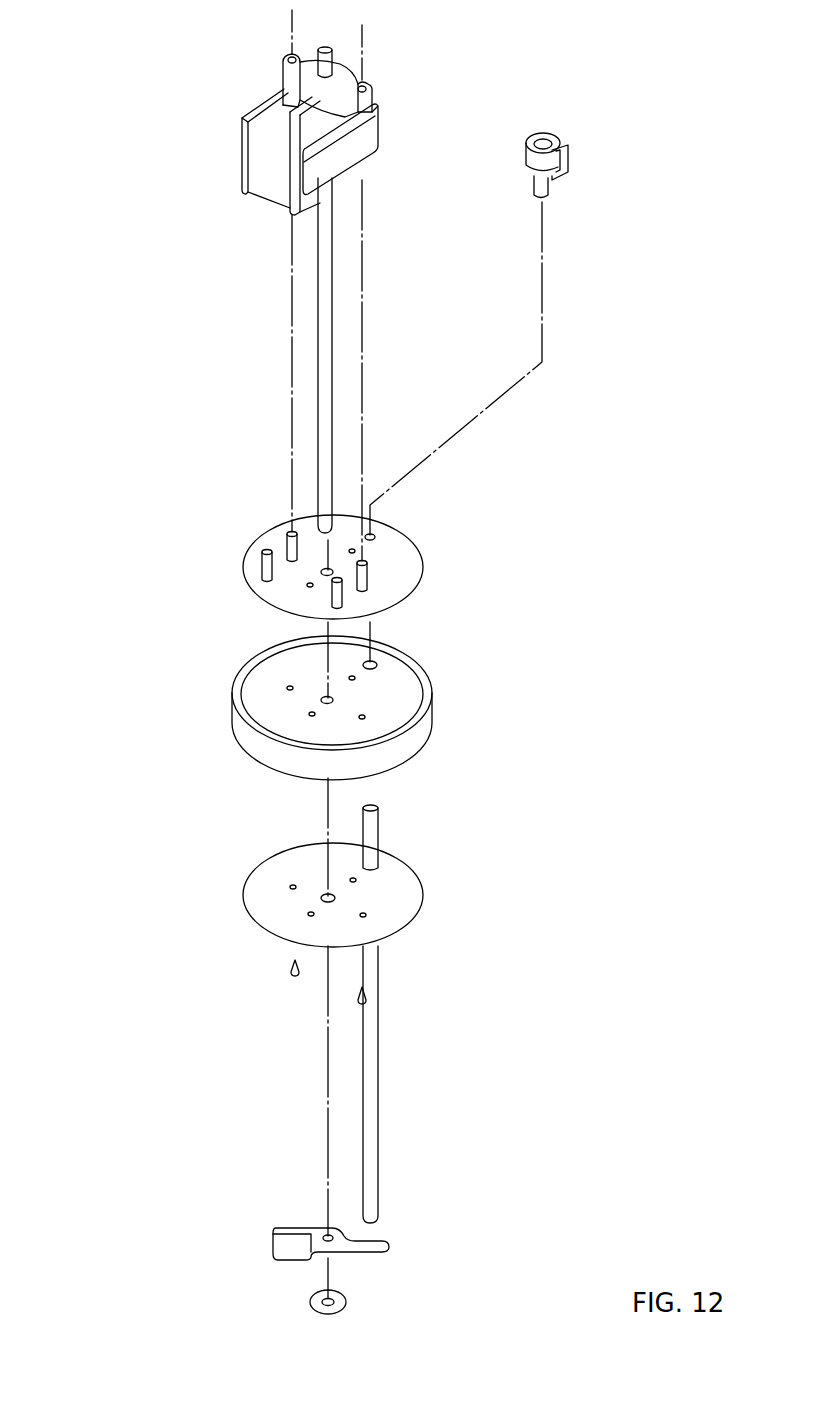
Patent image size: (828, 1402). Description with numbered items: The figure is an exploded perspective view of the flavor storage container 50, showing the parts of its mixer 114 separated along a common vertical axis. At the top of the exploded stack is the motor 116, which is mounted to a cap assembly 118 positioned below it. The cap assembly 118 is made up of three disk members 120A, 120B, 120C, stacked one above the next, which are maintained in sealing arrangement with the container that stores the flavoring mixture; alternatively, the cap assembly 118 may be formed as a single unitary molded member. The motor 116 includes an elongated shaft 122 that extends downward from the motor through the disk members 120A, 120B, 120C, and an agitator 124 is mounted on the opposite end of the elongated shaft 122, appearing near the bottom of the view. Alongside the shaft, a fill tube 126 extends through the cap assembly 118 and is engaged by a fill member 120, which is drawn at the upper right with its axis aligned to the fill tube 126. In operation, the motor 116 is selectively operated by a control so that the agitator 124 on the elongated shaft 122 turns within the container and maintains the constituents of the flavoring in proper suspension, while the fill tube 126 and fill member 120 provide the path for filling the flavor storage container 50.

The flavor storage container 50 is at (612, 618).
The mixer 114 is at (110, 1272).
The motor 116 is at (390, 129).
The cap assembly 118 is at (206, 905).
The fill member 120 is at (574, 158).
The disk member 120A is at (428, 547).
The disk member 120B is at (436, 716).
The disk member 120C is at (429, 896).
The elongated shaft 122 is at (334, 387).
The agitator 124 is at (392, 1249).
The fill tube 126 is at (379, 1048).